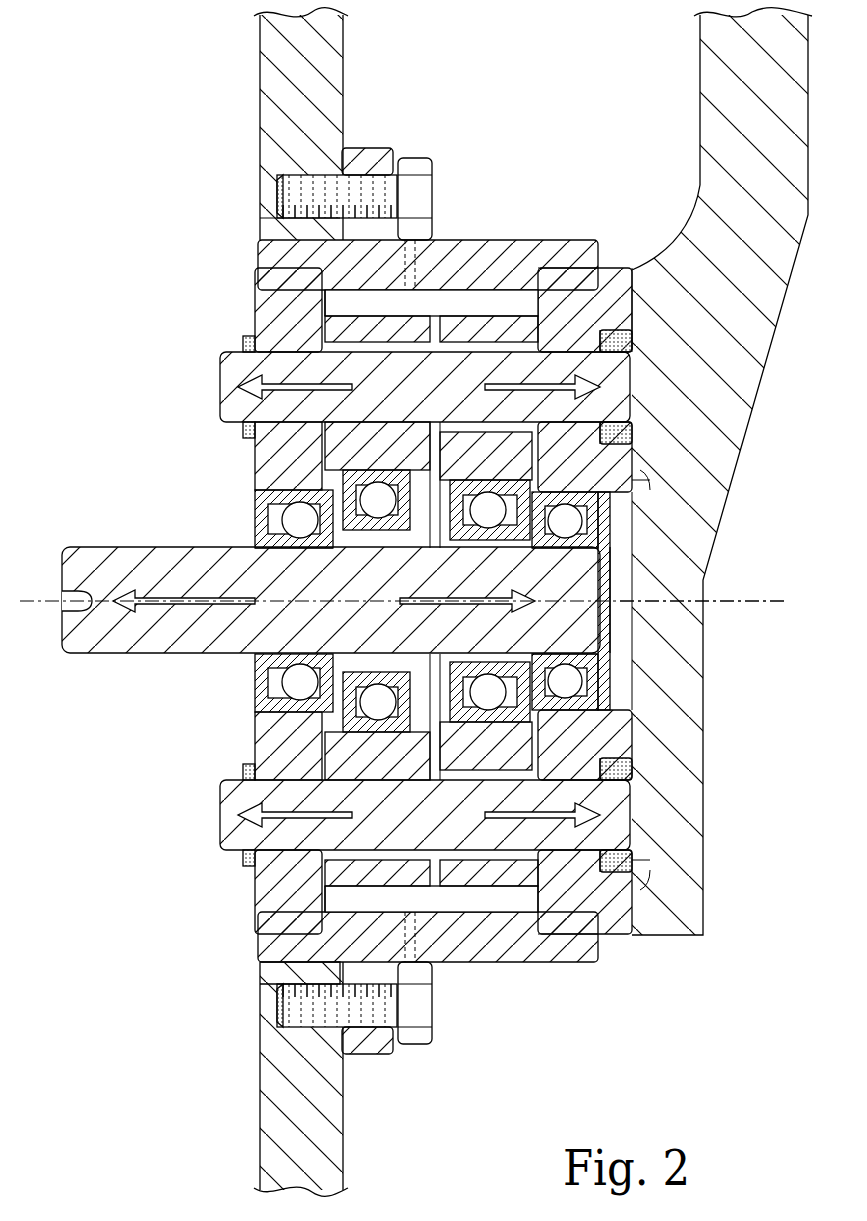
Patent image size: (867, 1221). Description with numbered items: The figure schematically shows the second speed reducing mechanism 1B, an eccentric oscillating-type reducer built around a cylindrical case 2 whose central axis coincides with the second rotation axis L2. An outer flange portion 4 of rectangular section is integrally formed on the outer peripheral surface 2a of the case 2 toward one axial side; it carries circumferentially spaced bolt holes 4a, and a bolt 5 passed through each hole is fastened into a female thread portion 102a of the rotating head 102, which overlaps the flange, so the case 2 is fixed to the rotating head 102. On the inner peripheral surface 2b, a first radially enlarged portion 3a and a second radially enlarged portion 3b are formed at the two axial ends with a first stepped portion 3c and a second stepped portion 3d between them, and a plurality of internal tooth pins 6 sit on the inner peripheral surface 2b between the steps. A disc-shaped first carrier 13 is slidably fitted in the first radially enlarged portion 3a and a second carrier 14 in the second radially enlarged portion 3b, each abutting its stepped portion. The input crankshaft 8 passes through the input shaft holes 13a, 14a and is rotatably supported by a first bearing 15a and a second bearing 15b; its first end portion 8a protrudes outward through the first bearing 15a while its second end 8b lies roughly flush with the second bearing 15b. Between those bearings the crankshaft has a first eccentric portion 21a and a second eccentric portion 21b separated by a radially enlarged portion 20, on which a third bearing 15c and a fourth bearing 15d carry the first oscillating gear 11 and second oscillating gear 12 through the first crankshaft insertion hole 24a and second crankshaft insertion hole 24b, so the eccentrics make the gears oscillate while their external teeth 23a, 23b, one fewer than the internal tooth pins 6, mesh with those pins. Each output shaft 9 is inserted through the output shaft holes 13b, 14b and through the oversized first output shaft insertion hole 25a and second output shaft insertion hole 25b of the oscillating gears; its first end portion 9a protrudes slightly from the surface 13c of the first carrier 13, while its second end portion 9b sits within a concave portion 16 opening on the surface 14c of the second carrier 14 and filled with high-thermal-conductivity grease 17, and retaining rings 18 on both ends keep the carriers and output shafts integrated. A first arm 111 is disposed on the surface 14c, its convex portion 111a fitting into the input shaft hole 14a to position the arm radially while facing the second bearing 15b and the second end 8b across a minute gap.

The second speed reducing mechanism 1B is at (190, 98).
The case 2 is at (531, 232).
The outer peripheral surface 2a is at (448, 250).
The inner peripheral surface 2b is at (320, 300).
The first radially enlarged portion 3a is at (275, 300).
The second radially enlarged portion 3b is at (598, 268).
The first stepped portion 3c is at (300, 270).
The second stepped portion 3d is at (562, 268).
The outer flange portion 4 is at (362, 148).
The bolt hole 4a is at (345, 195).
The bolt 5 is at (412, 158).
The internal tooth pin 6 is at (470, 300).
The input crankshaft 8 is at (100, 547).
The first end portion 8a is at (72, 585).
The second end 8b is at (612, 610).
The output shaft 9 is at (370, 290).
The first end portion 9a is at (240, 385).
The second end portion 9b is at (640, 400).
The first oscillating gear 11 is at (545, 920).
The second oscillating gear 12 is at (430, 930).
The first carrier 13 is at (243, 742).
The input shaft hole 13a is at (262, 745).
The output shaft hole 13b is at (258, 355).
The surface 13c is at (265, 900).
The second carrier 14 is at (642, 748).
The input shaft hole 14a is at (600, 712).
The output shaft hole 14b is at (625, 440).
The surface 14c is at (620, 330).
The first bearing 15a is at (270, 505).
The second bearing 15b is at (607, 530).
The third bearing 15c is at (270, 690).
The fourth bearing 15d is at (610, 580).
The concave portion 16 is at (640, 470).
The grease 17 is at (640, 485).
The retaining ring 18 is at (245, 345).
The radially enlarged portion 20 is at (330, 762).
The first eccentric portion 21a is at (275, 535).
The second eccentric portion 21b is at (606, 690).
The external teeth 23a is at (412, 275).
The external teeth 23b is at (500, 325).
The first crankshaft insertion hole 24a is at (268, 470).
The second crankshaft insertion hole 24b is at (605, 515).
The first output shaft insertion hole 25a is at (245, 432).
The second output shaft insertion hole 25b is at (620, 385).
The rotating head 102 is at (262, 1105).
The female thread portion 102a is at (283, 197).
The first arm 111 is at (700, 80).
The convex portion 111a is at (612, 630).
The second rotation axis L2 is at (30, 604).